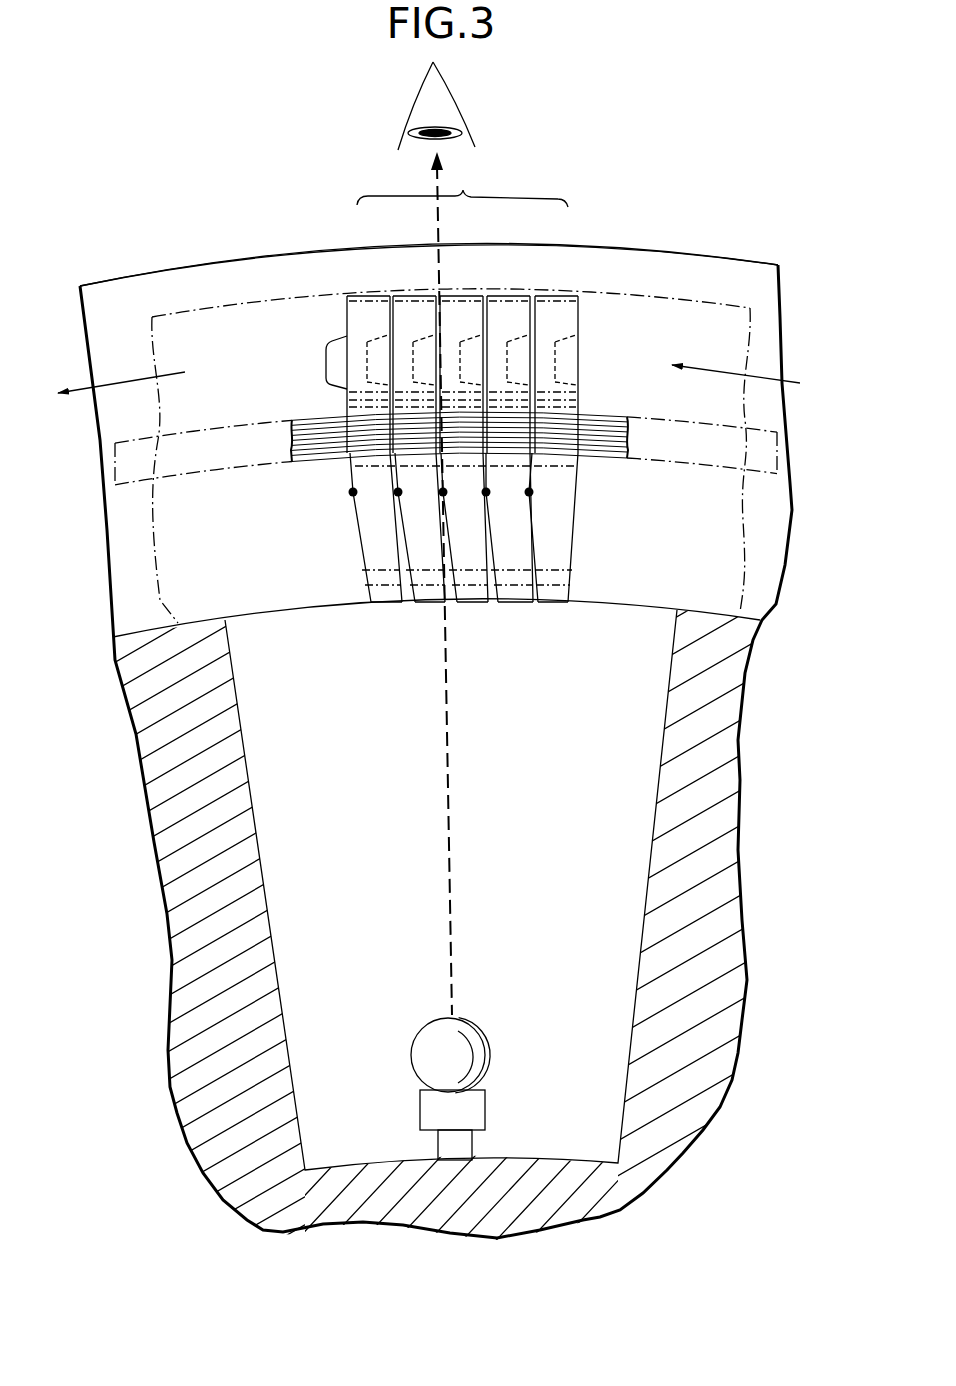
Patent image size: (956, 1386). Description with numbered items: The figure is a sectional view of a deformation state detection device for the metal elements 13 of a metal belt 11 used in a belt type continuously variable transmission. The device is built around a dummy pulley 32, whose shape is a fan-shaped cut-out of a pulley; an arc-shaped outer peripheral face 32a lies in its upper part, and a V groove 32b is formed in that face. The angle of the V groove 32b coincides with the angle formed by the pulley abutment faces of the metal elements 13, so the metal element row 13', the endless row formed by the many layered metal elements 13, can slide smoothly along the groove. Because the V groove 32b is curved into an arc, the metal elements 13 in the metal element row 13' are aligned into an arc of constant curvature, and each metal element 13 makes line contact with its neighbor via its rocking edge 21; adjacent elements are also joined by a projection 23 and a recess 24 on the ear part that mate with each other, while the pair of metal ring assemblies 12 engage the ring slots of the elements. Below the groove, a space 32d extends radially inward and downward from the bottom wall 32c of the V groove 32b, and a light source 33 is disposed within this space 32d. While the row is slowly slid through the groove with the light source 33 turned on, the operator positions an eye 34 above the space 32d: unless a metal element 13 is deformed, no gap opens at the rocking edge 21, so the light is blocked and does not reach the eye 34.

The metal belt 11 is at (508, 398).
The metal ring assembly 12 is at (607, 410).
The metal element 13 is at (462, 399).
The metal element row 13' is at (462, 182).
The rocking edge 21 is at (398, 492).
The projection 23 is at (326, 350).
The recess 24 is at (582, 344).
The dummy pulley 32 is at (144, 262).
The arc-shaped outer peripheral face 32a is at (713, 257).
The V groove 32b is at (280, 257).
The bottom wall 32c is at (737, 612).
The space 32d is at (240, 655).
The light source 33 is at (485, 1032).
The eye 34 is at (423, 97).